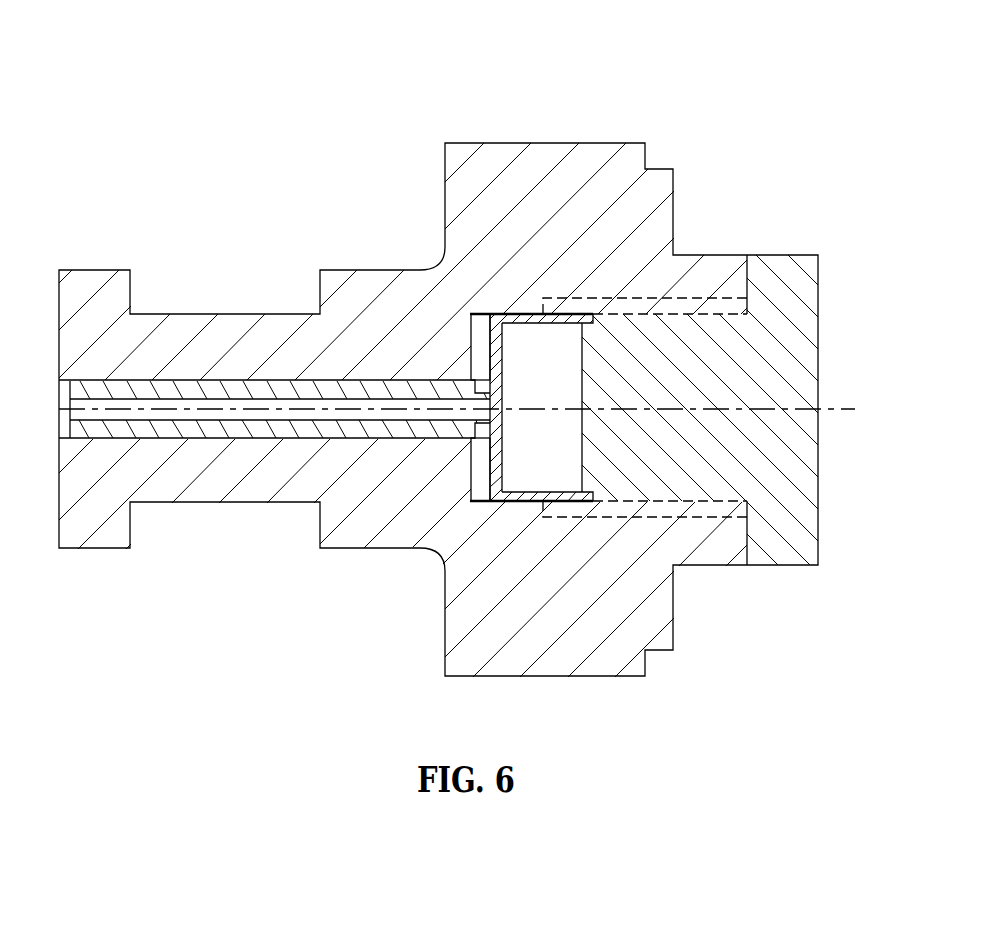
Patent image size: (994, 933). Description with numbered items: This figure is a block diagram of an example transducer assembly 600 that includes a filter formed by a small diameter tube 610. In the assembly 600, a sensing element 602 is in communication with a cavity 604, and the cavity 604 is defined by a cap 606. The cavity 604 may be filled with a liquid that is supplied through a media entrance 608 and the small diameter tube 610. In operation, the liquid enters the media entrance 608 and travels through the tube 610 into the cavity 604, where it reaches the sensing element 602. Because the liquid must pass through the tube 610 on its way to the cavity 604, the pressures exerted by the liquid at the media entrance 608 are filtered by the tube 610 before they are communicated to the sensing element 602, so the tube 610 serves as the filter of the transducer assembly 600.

The transducer assembly 600 is at (496, 90).
The sensing element 602 is at (572, 400).
The cavity 604 is at (532, 338).
The cap 606 is at (470, 486).
The media entrance 608 is at (60, 404).
The small diameter tube 610 is at (263, 435).